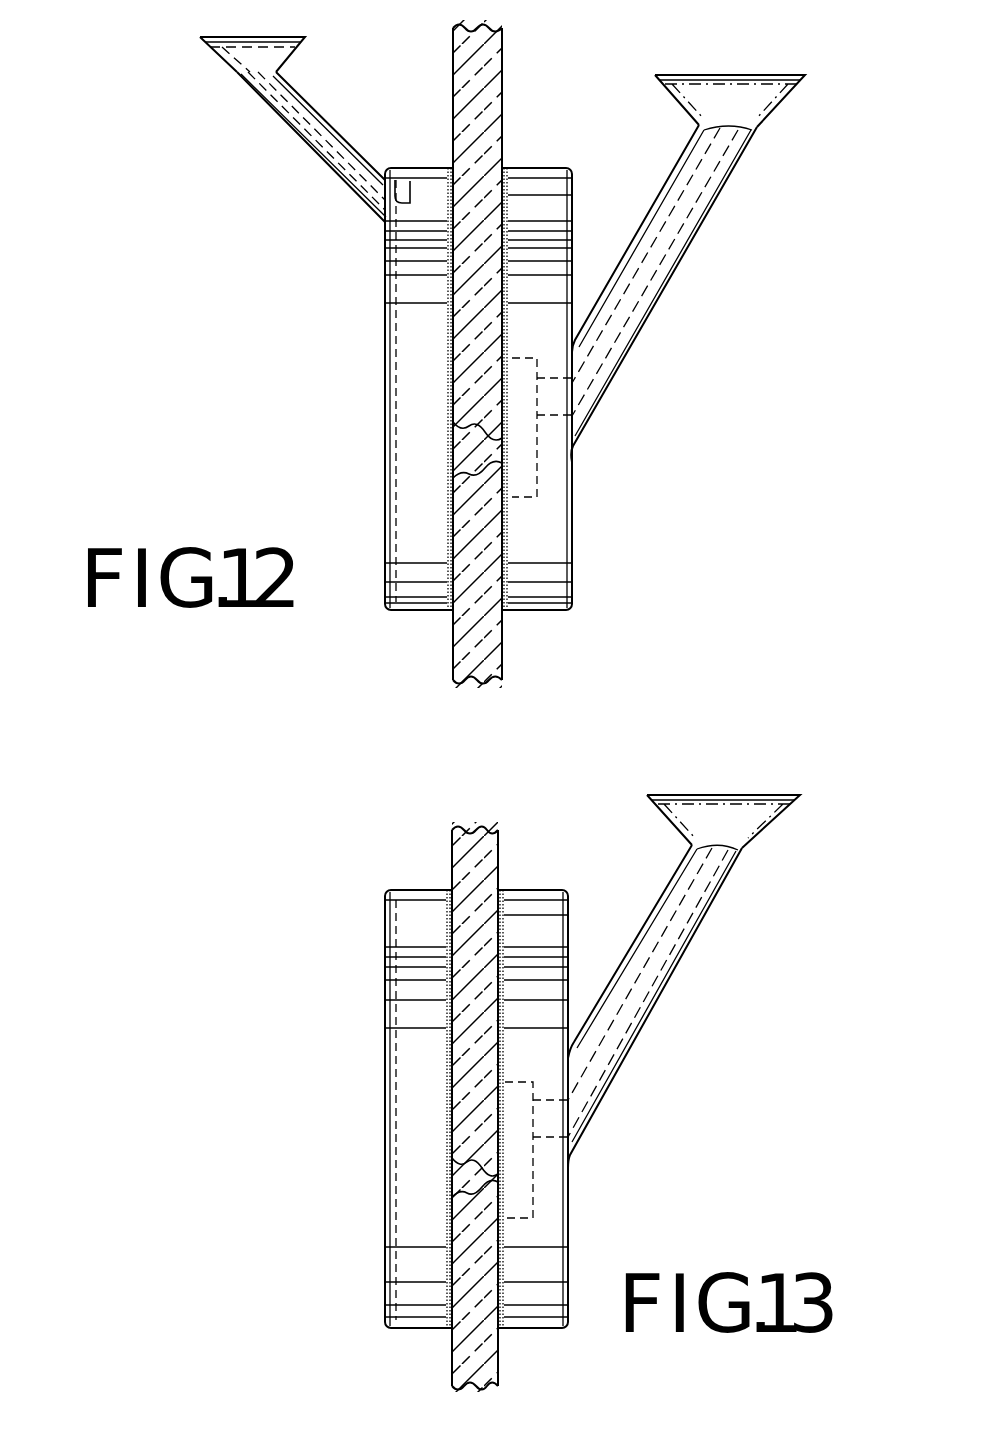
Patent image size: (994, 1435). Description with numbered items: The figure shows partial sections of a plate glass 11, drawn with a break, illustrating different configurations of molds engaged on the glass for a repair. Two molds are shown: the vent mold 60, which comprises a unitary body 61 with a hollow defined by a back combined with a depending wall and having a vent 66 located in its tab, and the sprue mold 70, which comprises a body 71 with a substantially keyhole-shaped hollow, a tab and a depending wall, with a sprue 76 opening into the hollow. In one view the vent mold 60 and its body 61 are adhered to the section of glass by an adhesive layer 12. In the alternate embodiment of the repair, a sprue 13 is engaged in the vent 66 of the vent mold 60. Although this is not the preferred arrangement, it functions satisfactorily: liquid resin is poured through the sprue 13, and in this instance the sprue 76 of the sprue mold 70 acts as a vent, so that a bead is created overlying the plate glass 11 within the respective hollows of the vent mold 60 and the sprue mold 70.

In FIG. 12, the plate glass 11 is at (470, 645).
In FIG. 13, the plate glass 11 is at (470, 1362).
In FIG. 13, the adhesive layer 12 is at (445, 890).
In FIG. 12, the sprue 13 is at (318, 137).
In FIG. 12, the vent mold 60 is at (368, 386).
In FIG. 13, the vent mold 60 is at (372, 1185).
In FIG. 12, the unitary body 61 is at (380, 298).
In FIG. 13, the unitary body 61 is at (380, 1035).
In FIG. 12, the vent 66 is at (410, 170).
In FIG. 12, the sprue mold 70 is at (543, 620).
In FIG. 13, the sprue mold 70 is at (541, 1342).
In FIG. 12, the body 71 is at (578, 537).
In FIG. 13, the body 71 is at (571, 1235).
In FIG. 12, the sprue 76 is at (692, 225).
In FIG. 13, the sprue 76 is at (684, 981).